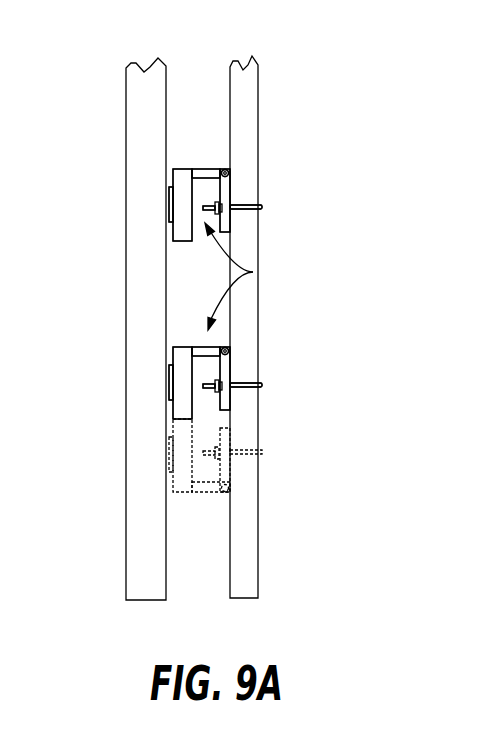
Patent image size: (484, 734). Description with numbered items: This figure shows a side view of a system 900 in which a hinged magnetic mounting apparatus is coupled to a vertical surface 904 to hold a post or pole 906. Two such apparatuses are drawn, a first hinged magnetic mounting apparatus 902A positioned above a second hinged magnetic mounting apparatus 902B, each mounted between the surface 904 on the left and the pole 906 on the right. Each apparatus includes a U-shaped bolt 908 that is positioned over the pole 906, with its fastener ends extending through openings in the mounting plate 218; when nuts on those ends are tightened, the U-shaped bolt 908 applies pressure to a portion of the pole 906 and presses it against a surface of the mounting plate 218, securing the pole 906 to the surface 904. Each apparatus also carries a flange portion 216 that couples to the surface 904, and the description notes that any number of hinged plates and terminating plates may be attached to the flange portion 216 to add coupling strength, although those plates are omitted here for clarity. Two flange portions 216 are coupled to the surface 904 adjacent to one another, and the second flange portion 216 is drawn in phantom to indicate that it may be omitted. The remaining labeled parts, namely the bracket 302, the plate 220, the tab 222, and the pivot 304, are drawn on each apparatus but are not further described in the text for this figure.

The system 900 is at (114, 50).
The first hinged magnetic mounting apparatus 902A is at (308, 202).
The second hinged magnetic mounting apparatus 902B is at (331, 382).
The vertical surface 904 is at (147, 499).
The post or pole 906 is at (252, 548).
The bracket 302 is at (212, 167).
The mounting plate 220 is at (182, 187).
The tab 222 is at (169, 209).
The mounting plate 218 is at (232, 190).
The pivot 304 is at (229, 171).
The U-shaped bolt 908 is at (262, 209).
The flange portion 216 is at (253, 272).